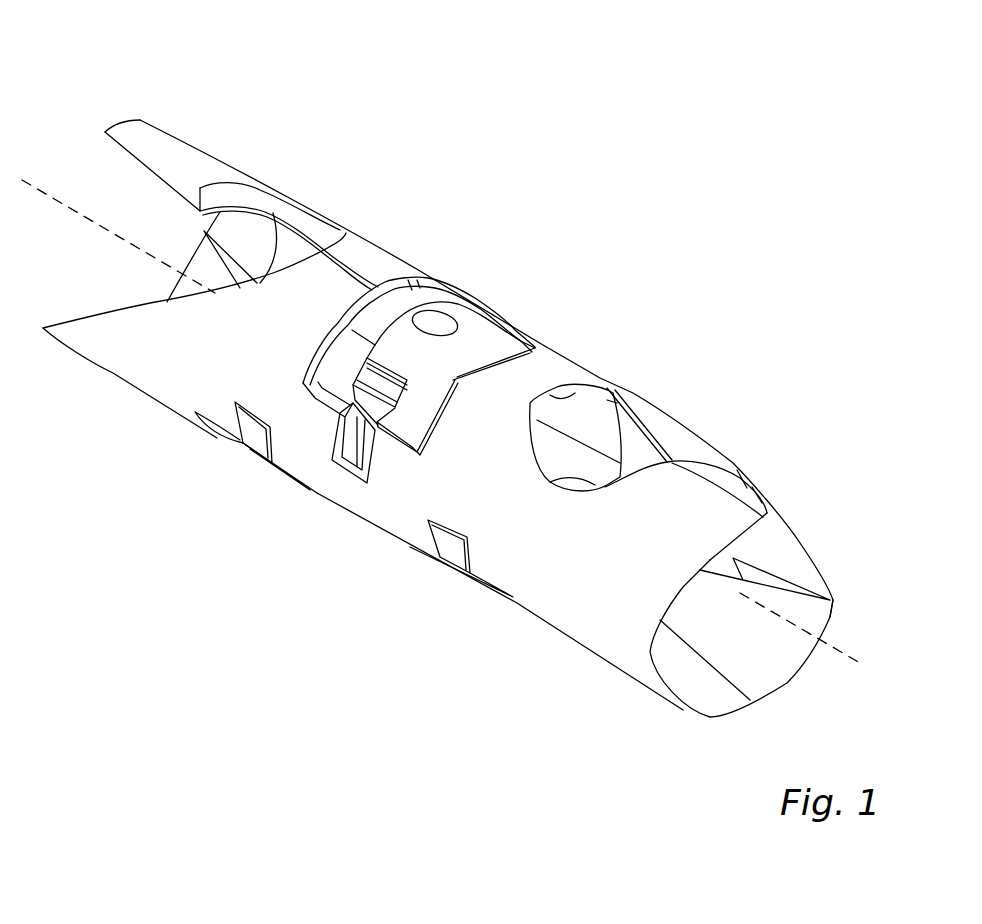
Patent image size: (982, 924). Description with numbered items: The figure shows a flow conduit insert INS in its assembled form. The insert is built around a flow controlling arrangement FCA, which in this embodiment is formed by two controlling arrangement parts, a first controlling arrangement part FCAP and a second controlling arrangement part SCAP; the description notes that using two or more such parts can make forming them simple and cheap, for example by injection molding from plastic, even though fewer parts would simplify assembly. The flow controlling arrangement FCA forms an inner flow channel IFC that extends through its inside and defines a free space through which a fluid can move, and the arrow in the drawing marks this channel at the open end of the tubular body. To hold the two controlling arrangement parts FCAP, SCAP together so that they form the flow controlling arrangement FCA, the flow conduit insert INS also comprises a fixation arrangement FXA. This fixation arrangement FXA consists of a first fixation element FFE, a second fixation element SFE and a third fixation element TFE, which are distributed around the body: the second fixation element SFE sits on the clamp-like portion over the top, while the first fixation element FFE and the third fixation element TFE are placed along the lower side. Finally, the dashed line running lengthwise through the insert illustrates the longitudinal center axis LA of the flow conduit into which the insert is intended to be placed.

The flow conduit insert INS is at (640, 205).
The longitudinal center axis LA is at (93, 217).
The flow controlling arrangement FCA is at (322, 297).
The fixation arrangement FXA is at (343, 405).
The second fixation element SFE is at (415, 303).
The first fixation element FFE is at (270, 457).
The third fixation element TFE is at (470, 560).
The first controlling arrangement part FCAP is at (547, 360).
The second controlling arrangement part SCAP is at (567, 557).
The inner flow channel IFC is at (730, 618).